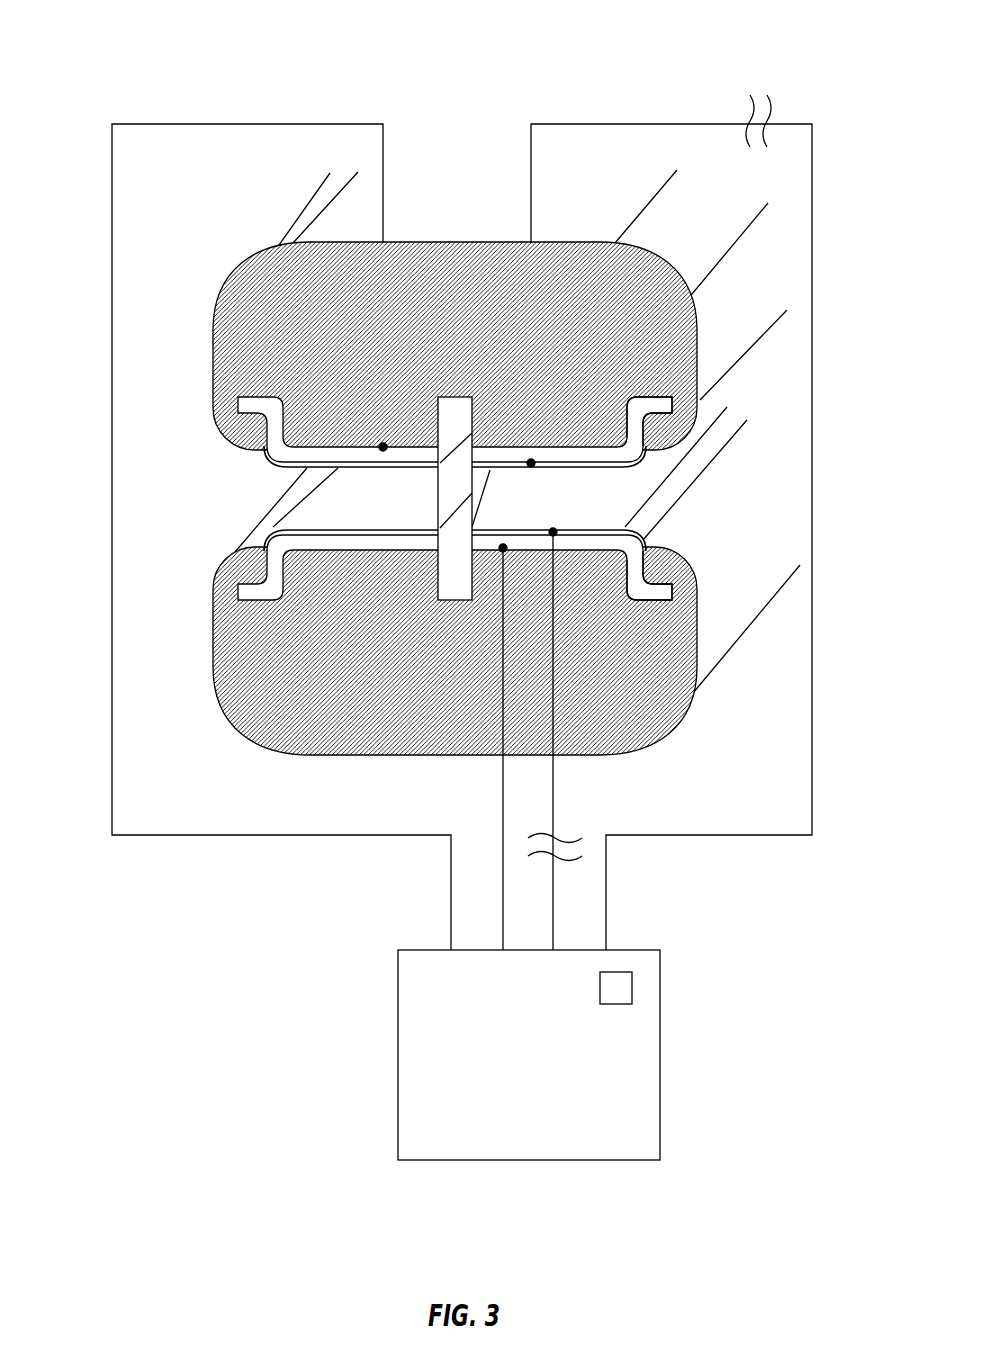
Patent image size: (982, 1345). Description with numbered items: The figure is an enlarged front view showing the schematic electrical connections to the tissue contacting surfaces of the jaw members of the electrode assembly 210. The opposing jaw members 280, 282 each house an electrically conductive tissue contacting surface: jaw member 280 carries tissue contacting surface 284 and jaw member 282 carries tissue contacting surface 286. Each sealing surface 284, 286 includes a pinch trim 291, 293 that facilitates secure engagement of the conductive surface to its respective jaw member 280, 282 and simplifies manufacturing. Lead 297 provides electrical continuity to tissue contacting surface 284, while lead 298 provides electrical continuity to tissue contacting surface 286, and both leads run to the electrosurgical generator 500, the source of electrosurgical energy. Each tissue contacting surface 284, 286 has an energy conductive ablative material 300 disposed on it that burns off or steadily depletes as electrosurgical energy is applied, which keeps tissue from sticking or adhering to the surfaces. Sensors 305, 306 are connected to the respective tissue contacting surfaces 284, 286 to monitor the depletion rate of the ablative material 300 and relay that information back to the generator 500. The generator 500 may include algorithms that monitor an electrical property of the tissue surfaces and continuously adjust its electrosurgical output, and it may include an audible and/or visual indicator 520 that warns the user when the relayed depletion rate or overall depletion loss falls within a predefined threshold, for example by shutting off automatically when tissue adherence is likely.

The electrode assembly 210 is at (475, 378).
The jaw member 280 is at (633, 283).
The jaw member 282 is at (632, 712).
The tissue contacting surface 284 is at (323, 437).
The tissue contacting surface 286 is at (323, 561).
The pinch trim 291 is at (680, 400).
The pinch trim 293 is at (680, 590).
The lead 297 is at (500, 812).
The lead 298 is at (147, 124).
The ablative material 300 is at (280, 527).
The sensor 305 is at (630, 124).
The sensor 306 is at (556, 812).
The electrosurgical generator 500 is at (660, 1085).
The indicator 520 is at (633, 990).